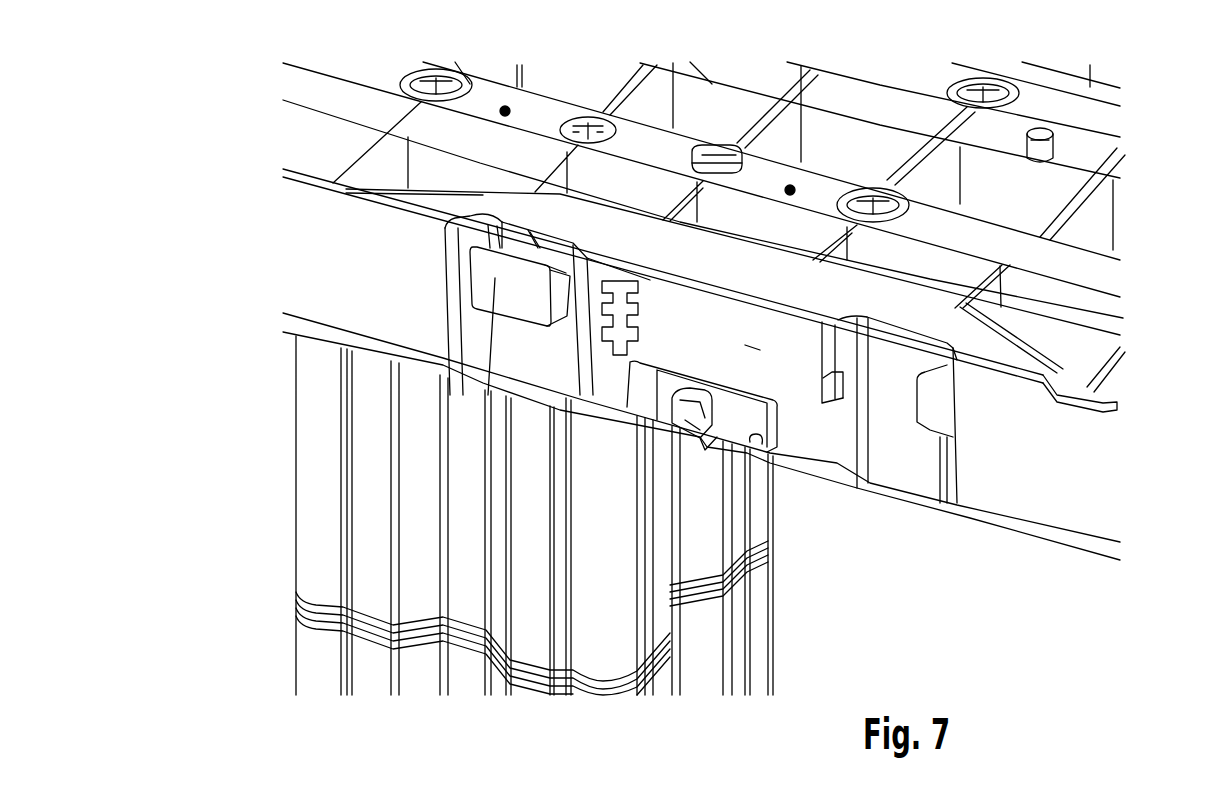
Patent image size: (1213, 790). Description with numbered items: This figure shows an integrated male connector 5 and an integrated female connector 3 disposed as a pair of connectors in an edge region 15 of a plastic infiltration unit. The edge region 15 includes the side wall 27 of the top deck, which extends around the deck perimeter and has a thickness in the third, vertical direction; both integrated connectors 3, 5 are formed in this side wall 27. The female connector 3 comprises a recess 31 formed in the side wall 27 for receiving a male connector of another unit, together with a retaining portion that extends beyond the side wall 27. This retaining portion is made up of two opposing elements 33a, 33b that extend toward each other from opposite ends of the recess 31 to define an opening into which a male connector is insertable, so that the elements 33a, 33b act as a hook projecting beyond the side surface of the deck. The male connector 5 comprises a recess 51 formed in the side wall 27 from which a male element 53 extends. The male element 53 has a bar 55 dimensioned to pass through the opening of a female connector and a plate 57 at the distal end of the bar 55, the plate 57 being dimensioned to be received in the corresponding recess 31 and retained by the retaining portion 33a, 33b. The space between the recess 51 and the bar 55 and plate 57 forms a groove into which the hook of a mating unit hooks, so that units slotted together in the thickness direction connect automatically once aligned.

The integrated female connector 3 is at (902, 461).
The integrated male connector 5 is at (446, 258).
The edge region 15 is at (328, 193).
The side wall 27 is at (747, 350).
The recess 31 is at (895, 360).
The opposing element 33a is at (927, 403).
The opposing element 33b is at (832, 375).
The recess 51 is at (500, 245).
The male element 53 is at (512, 297).
The bar 55 is at (530, 225).
The plate 57 is at (485, 285).